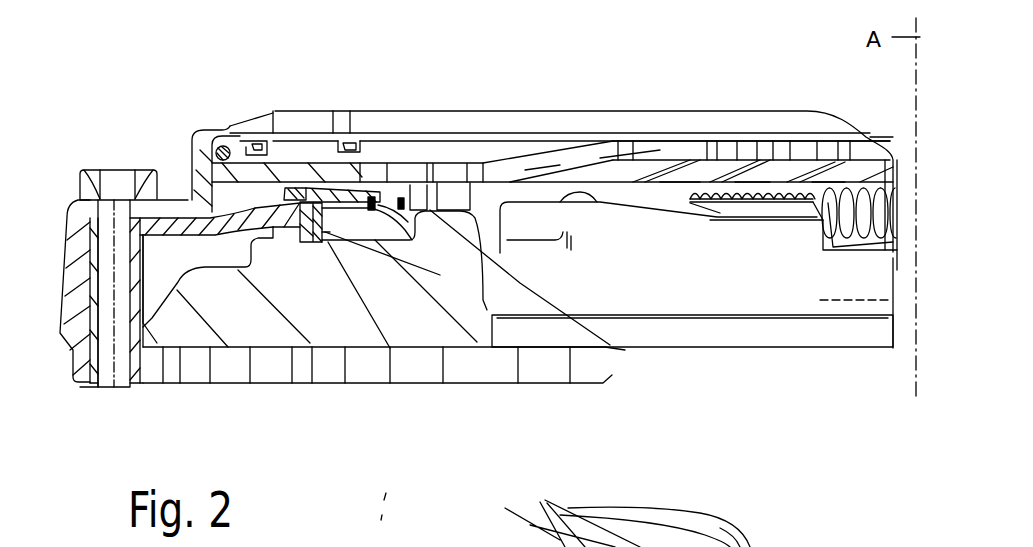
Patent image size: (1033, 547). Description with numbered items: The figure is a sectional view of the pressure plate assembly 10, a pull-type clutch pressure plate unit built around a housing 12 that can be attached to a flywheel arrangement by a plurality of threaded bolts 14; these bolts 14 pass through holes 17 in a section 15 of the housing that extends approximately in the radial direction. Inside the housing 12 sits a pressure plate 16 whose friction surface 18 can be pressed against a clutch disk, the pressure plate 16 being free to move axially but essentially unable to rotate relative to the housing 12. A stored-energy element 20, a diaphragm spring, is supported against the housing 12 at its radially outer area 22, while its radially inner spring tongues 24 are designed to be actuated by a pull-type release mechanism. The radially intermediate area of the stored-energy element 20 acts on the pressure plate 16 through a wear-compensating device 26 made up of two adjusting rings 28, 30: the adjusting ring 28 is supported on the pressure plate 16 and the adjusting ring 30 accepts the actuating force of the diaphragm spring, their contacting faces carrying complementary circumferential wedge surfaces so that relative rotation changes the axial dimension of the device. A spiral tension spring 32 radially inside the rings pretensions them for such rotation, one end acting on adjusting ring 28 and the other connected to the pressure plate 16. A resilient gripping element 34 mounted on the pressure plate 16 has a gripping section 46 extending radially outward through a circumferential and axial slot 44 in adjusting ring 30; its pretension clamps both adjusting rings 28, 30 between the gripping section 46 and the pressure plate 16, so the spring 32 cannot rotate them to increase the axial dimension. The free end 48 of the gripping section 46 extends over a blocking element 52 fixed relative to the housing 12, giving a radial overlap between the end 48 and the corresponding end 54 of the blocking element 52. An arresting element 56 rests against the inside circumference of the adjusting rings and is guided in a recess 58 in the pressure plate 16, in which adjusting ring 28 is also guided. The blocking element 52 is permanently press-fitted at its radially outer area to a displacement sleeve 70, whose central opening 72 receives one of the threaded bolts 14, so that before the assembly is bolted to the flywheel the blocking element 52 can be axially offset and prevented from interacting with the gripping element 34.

The pressure plate assembly 10 is at (752, 95).
The housing 12 is at (472, 110).
The threaded bolts 14 is at (102, 187).
The section of the housing arrangement 15 is at (147, 200).
The pressure plate 16 is at (733, 333).
The holes 17 is at (88, 200).
The friction surface 18 is at (473, 350).
The stored-energy element 20 is at (457, 173).
The radially outer area 22 is at (228, 157).
The spring tongues 24 is at (650, 148).
The wear-compensating device 26 is at (330, 232).
The adjusting ring 28 is at (307, 243).
The adjusting ring 30 is at (317, 186).
The spiral tension spring 32 is at (837, 197).
The gripping element 34 is at (380, 220).
The circumferential and axial slot 44 is at (305, 187).
The gripping section 46 is at (338, 193).
The free end 48 is at (293, 187).
The blocking element 52 is at (203, 208).
The end of the blocking element 54 is at (272, 228).
The arresting element 56 is at (620, 343).
The recess 58 is at (320, 243).
The displacement sleeve 70 is at (92, 377).
The central opening 72 is at (128, 340).